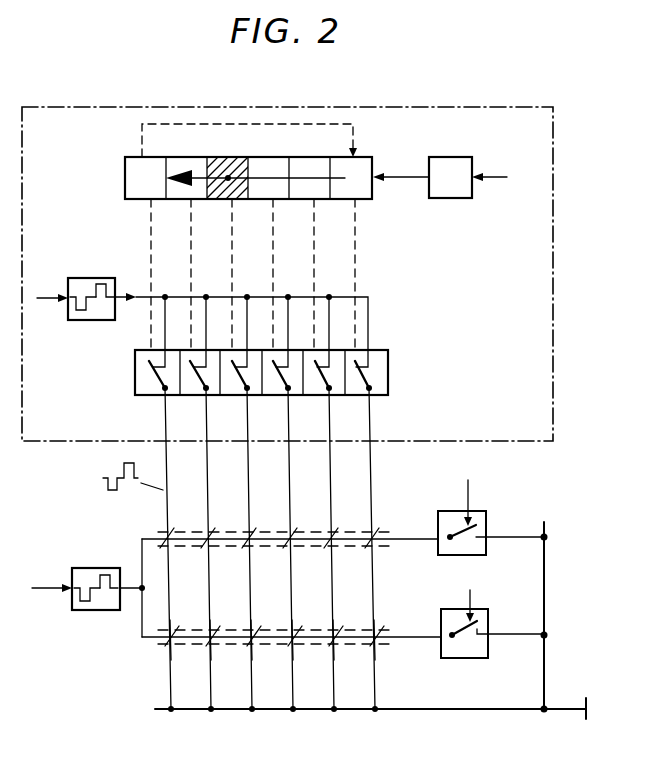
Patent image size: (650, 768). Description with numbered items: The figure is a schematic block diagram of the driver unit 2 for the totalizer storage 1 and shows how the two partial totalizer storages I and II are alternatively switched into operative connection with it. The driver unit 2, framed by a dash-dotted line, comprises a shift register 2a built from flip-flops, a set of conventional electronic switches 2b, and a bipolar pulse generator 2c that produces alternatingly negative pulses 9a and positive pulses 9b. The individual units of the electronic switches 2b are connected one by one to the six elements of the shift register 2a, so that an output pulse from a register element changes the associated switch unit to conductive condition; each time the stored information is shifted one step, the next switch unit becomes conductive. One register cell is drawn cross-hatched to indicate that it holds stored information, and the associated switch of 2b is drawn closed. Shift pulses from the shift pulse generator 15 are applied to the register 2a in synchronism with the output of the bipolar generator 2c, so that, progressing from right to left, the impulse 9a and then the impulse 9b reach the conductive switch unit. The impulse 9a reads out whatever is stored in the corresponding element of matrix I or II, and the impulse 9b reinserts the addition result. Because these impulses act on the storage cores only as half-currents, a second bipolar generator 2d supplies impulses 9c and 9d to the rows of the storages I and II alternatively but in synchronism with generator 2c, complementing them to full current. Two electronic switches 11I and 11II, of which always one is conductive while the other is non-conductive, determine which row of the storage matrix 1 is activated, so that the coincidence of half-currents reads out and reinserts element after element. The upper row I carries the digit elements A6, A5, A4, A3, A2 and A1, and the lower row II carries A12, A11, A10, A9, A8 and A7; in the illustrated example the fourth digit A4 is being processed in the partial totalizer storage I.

The driver unit 2 is at (440, 108).
The shift register 2a is at (363, 200).
The set of electronic switches 2b is at (390, 378).
The bipolar pulse generator 2c is at (72, 278).
The second bipolar generator 2d is at (72, 575).
The negative pulse 9a is at (83, 320).
The positive pulse 9b is at (99, 283).
The row impulse 9c is at (90, 611).
The row impulse 9d is at (109, 568).
The shift pulse generator 15 is at (473, 159).
The totalizer storage 1 is at (344, 591).
The electronic switch 11I is at (487, 514).
The electronic switch 11II is at (488, 611).
The partial totalizer storage I is at (150, 518).
The partial totalizer storage II is at (133, 647).
The digit storage element A1 is at (382, 548).
The digit storage element A2 is at (341, 548).
The digit storage element A3 is at (300, 548).
The fourth digit A4 is at (259, 548).
The digit storage element A5 is at (218, 548).
The digit storage element A6 is at (177, 548).
The digit storage element A7 is at (386, 635).
The digit storage element A8 is at (344, 635).
The digit storage element A9 is at (303, 635).
The digit storage element A10 is at (266, 635).
The digit storage element A11 is at (225, 635).
The digit storage element A12 is at (184, 635).